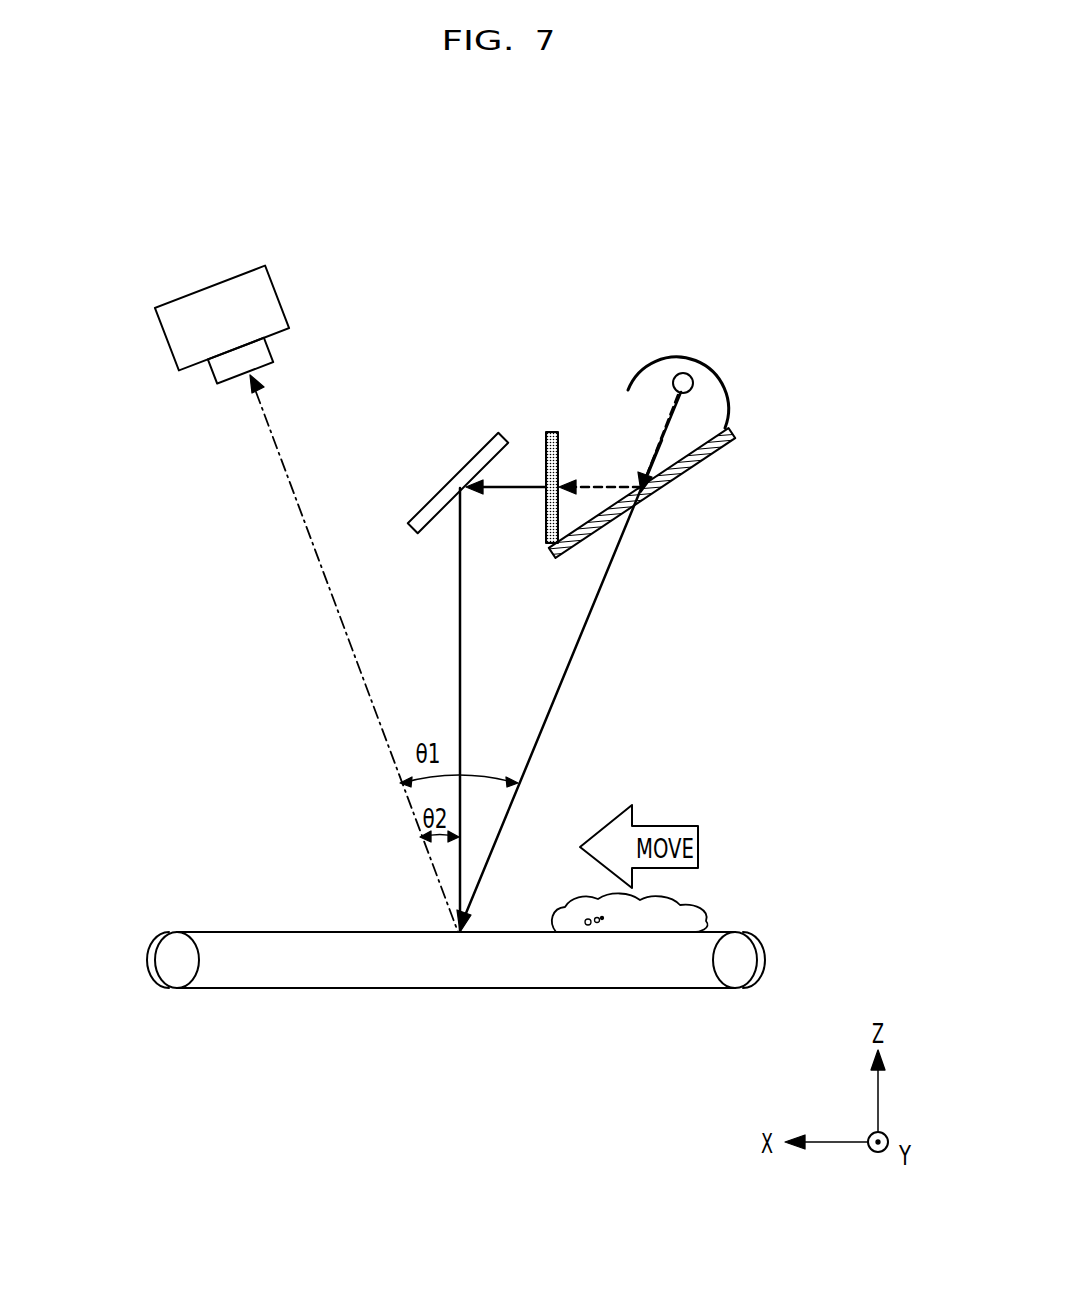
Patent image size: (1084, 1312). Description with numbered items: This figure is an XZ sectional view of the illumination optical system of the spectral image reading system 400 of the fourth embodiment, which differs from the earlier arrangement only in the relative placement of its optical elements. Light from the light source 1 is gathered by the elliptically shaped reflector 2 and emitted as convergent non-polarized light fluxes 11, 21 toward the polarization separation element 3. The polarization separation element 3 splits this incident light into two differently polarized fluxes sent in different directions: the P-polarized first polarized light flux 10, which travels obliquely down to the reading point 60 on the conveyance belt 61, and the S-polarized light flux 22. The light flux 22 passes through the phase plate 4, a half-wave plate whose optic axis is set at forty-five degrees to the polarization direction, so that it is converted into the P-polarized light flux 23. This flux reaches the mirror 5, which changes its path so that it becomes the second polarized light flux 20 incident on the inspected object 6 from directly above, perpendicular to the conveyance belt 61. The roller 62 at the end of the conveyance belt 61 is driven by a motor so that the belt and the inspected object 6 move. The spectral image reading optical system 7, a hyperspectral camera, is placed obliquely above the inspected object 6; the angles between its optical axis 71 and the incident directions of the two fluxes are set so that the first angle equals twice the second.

The spectral image reading system 400 is at (700, 224).
The light source 1 is at (692, 373).
The light collecting element (reflector) 2 is at (732, 370).
The polarization separation element 3 is at (733, 435).
The non-polarized light flux 21 is at (665, 436).
The non-polarized light flux 11 is at (667, 437).
The light flux (S-polarized light) 22 is at (603, 487).
The phase plate (λ/2 plate) 4 is at (558, 512).
The light flux (P-polarized light) 23 is at (529, 487).
The optical-path changing element (mirror) 5 is at (430, 490).
The second polarized light flux 20 is at (458, 668).
The first polarized light flux 10 is at (565, 680).
The spectral image reading optical system 7 is at (168, 337).
The optical axis 71 is at (307, 535).
The inspected object 6 is at (693, 908).
The reading point 60 is at (457, 935).
The conveyance belt 61 is at (372, 978).
The roller 62 is at (173, 973).